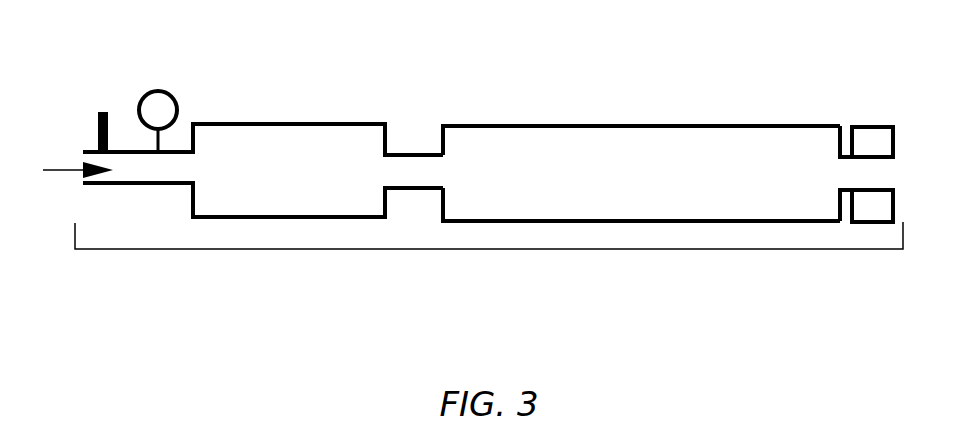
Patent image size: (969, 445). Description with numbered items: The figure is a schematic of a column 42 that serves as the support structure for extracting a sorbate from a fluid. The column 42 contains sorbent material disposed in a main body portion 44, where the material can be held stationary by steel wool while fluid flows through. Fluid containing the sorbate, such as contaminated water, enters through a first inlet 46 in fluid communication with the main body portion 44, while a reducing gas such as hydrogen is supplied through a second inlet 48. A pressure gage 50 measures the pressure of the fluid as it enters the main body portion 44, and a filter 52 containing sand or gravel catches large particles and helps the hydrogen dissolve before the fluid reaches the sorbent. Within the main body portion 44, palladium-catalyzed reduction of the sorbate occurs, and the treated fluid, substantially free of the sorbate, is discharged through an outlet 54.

The column 42 is at (500, 270).
The main body portion 44 is at (609, 144).
The first inlet 46 is at (43, 170).
The second inlet 48 is at (106, 72).
The pressure gage 50 is at (158, 62).
The filter 52 is at (290, 140).
The outlet 54 is at (876, 94).